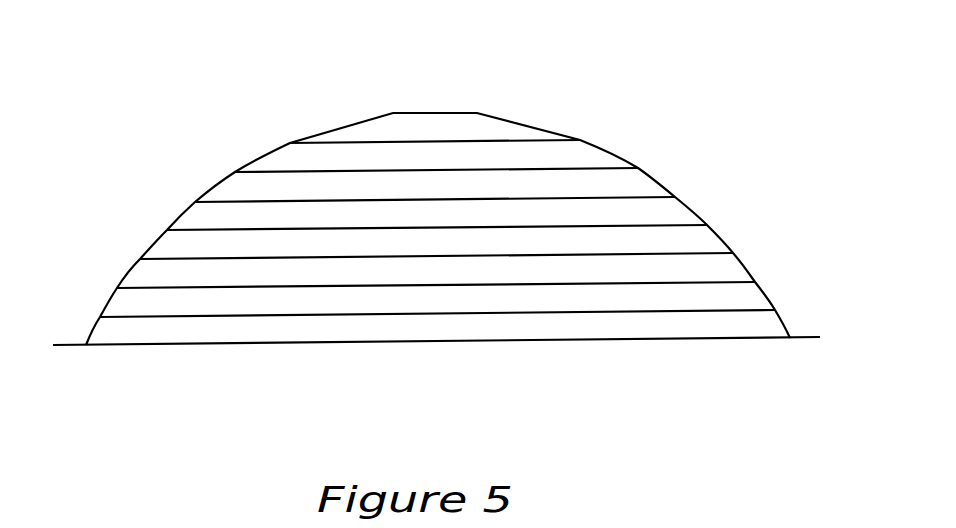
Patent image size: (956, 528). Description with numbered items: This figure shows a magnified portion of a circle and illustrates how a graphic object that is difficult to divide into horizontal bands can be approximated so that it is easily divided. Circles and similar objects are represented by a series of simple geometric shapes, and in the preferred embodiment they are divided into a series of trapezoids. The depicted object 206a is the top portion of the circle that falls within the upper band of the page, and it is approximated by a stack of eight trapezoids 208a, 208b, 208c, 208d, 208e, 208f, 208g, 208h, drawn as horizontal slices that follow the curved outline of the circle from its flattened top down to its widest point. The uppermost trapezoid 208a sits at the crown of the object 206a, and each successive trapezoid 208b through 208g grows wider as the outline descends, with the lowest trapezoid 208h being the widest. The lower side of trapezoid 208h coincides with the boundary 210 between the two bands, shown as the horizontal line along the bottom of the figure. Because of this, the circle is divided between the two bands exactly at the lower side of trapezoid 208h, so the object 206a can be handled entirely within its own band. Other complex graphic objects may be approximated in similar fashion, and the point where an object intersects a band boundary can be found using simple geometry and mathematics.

The object 206a is at (652, 83).
The trapezoid 208a is at (513, 121).
The trapezoid 208b is at (596, 143).
The trapezoid 208c is at (648, 172).
The trapezoid 208d is at (684, 197).
The trapezoid 208e is at (714, 225).
The trapezoid 208f is at (739, 253).
The trapezoid 208g is at (764, 284).
The trapezoid 208h is at (784, 315).
The boundary 210 is at (800, 337).